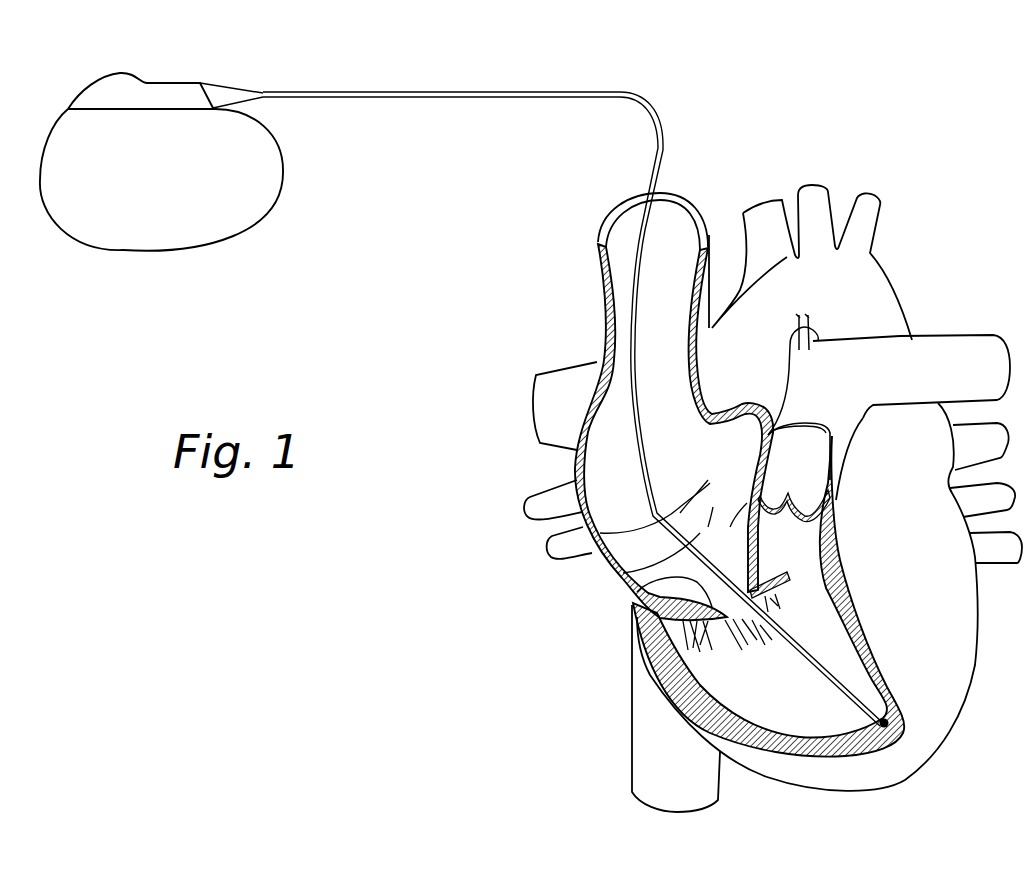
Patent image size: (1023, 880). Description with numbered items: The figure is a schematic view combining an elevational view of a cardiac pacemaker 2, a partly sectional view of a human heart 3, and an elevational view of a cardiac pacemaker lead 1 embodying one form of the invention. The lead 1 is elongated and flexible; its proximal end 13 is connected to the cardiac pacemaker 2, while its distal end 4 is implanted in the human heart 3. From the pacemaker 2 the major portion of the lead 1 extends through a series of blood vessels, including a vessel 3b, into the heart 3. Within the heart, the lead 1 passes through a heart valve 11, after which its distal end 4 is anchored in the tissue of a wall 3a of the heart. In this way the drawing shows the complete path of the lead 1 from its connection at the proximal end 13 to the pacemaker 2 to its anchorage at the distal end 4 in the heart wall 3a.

The cardiac pacemaker lead 1 is at (631, 82).
The cardiac pacemaker 2 is at (100, 233).
The human heart 3 is at (773, 490).
The wall 3a is at (813, 757).
The vessel 3b is at (680, 195).
The distal end 4 is at (880, 722).
The heart valve 11 is at (630, 590).
The proximal end 13 is at (231, 80).